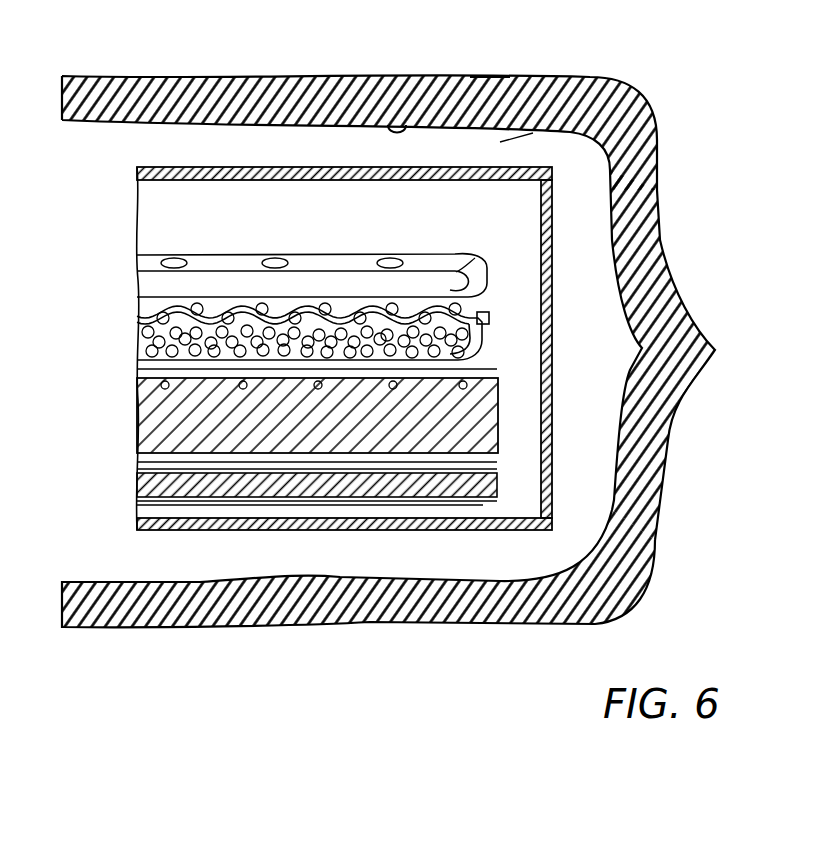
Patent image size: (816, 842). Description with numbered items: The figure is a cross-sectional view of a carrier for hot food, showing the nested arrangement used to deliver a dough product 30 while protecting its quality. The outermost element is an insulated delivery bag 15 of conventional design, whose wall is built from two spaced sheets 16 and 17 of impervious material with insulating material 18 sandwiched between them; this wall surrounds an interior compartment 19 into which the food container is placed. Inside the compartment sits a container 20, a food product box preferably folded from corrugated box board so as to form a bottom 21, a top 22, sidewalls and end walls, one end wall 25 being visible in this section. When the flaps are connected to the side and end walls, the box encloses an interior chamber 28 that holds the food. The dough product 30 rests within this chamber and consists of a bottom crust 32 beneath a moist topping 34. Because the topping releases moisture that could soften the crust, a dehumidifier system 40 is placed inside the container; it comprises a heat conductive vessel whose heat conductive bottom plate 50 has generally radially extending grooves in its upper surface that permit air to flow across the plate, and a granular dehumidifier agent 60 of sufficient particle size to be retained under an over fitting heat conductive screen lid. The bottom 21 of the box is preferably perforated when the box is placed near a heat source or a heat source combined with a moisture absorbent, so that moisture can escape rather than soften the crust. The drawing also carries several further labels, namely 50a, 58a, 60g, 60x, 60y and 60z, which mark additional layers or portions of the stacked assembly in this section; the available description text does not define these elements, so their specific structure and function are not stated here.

The insulated delivery bag 15 is at (290, 628).
The sheet of impervious material 16 is at (307, 78).
The sheet of impervious material 17 is at (405, 124).
The insulating material 18 is at (487, 80).
The interior compartment 19 is at (507, 143).
The container 20 is at (327, 353).
The bottom 21 is at (182, 523).
The top 22 is at (228, 167).
The end wall 25 is at (612, 213).
The interior chamber 28 is at (448, 218).
The dough product 30 is at (289, 248).
The bottom crust 32 is at (472, 262).
The moist topping 34 is at (305, 252).
The dehumidifier system 40 is at (130, 337).
The heat conductive bottom plate 50 is at (325, 339).
The block layer 50a is at (157, 432).
The spacer 58a is at (497, 382).
The granular dehumidifier agent 60 is at (486, 325).
The layer group 60g is at (130, 483).
The layer x 60x is at (497, 453).
The layer y 60y is at (483, 505).
The layer z 60z is at (473, 488).